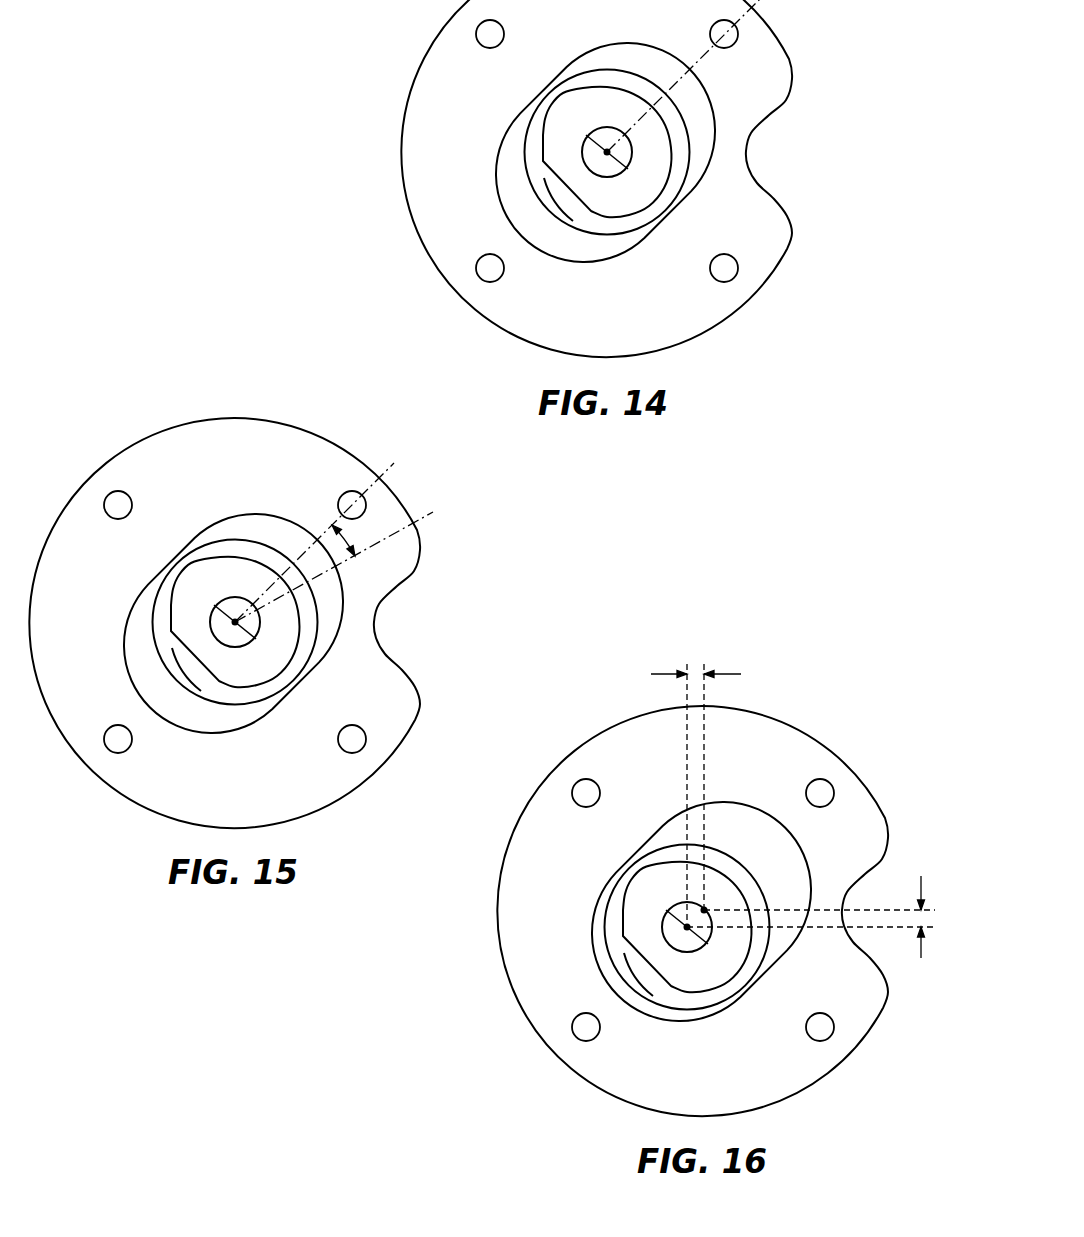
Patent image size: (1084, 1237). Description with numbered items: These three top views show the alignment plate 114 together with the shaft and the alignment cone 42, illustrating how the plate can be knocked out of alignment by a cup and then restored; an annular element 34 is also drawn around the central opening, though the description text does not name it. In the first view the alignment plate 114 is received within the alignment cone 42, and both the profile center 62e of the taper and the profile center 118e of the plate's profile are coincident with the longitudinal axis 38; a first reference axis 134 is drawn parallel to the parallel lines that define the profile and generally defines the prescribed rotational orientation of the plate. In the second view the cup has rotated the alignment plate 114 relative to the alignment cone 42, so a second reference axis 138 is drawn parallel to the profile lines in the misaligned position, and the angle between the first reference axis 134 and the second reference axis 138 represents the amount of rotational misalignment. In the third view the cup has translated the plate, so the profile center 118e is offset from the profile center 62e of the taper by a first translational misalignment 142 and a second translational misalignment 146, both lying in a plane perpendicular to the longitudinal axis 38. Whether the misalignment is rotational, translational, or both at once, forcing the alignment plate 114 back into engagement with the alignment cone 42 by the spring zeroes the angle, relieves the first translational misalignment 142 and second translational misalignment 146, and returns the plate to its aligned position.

In FIG. 14, the annular rib / ring 34 is at (563, 142).
In FIG. 15, the annular rib / ring 34 is at (214, 582).
In FIG. 16, the annular rib / ring 34 is at (655, 884).
In FIG. 14, the longitudinal axis 38 is at (460, 159).
In FIG. 15, the longitudinal axis 38 is at (168, 702).
In FIG. 16, the longitudinal axis 38 is at (585, 936).
In FIG. 14, the alignment cone 42 is at (563, 243).
In FIG. 15, the alignment cone 42 is at (233, 717).
In FIG. 16, the alignment cone 42 is at (703, 1020).
In FIG. 14, the profile center of the taper 62e is at (460, 159).
In FIG. 15, the profile center of the taper 62e is at (168, 702).
In FIG. 16, the profile center of the taper 62e is at (686, 943).
In FIG. 14, the alignment plate 114 is at (700, 300).
In FIG. 15, the alignment plate 114 is at (393, 704).
In FIG. 16, the alignment plate 114 is at (853, 997).
In FIG. 14, the profile center of the profile 118e is at (590, 170).
In FIG. 15, the profile center of the profile 118e is at (217, 640).
In FIG. 16, the profile center of the profile 118e is at (704, 910).
In FIG. 14, the first reference axis 134 is at (748, 20).
In FIG. 15, the first reference axis 134 is at (400, 533).
In FIG. 15, the second reference axis 138 is at (362, 482).
In FIG. 16, the first translational misalignment 142 is at (674, 795).
In FIG. 16, the second translational misalignment 146 is at (813, 903).